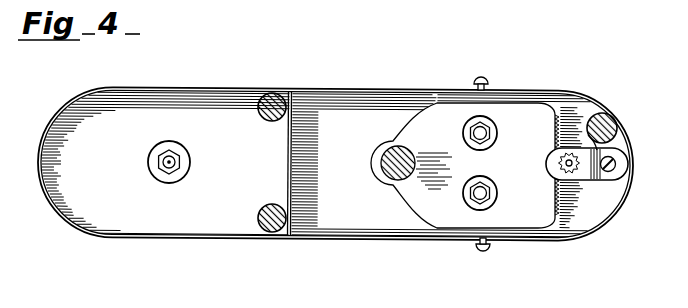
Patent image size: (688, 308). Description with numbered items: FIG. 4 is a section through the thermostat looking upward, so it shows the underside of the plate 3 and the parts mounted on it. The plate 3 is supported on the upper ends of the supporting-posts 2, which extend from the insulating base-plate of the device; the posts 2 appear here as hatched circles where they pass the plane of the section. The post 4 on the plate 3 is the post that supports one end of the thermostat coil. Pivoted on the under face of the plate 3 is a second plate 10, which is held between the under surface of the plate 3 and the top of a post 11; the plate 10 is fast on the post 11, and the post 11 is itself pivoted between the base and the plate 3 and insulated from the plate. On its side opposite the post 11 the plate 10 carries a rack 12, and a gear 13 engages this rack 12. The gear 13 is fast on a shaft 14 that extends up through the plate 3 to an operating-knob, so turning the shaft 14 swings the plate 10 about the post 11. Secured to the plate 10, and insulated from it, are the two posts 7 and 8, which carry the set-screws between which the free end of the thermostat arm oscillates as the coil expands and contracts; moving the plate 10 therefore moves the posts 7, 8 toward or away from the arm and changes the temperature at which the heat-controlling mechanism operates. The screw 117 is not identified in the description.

The supporting-posts 2 is at (634, 124).
The plate 3 is at (167, 163).
The post 4 is at (167, 165).
The post 7 is at (465, 133).
The post 8 is at (465, 193).
The plate 10 is at (465, 165).
The post 11 is at (384, 168).
The rack 12 is at (587, 179).
The gear 13 is at (569, 152).
The shaft 14 is at (588, 135).
The screw 117 is at (489, 246).